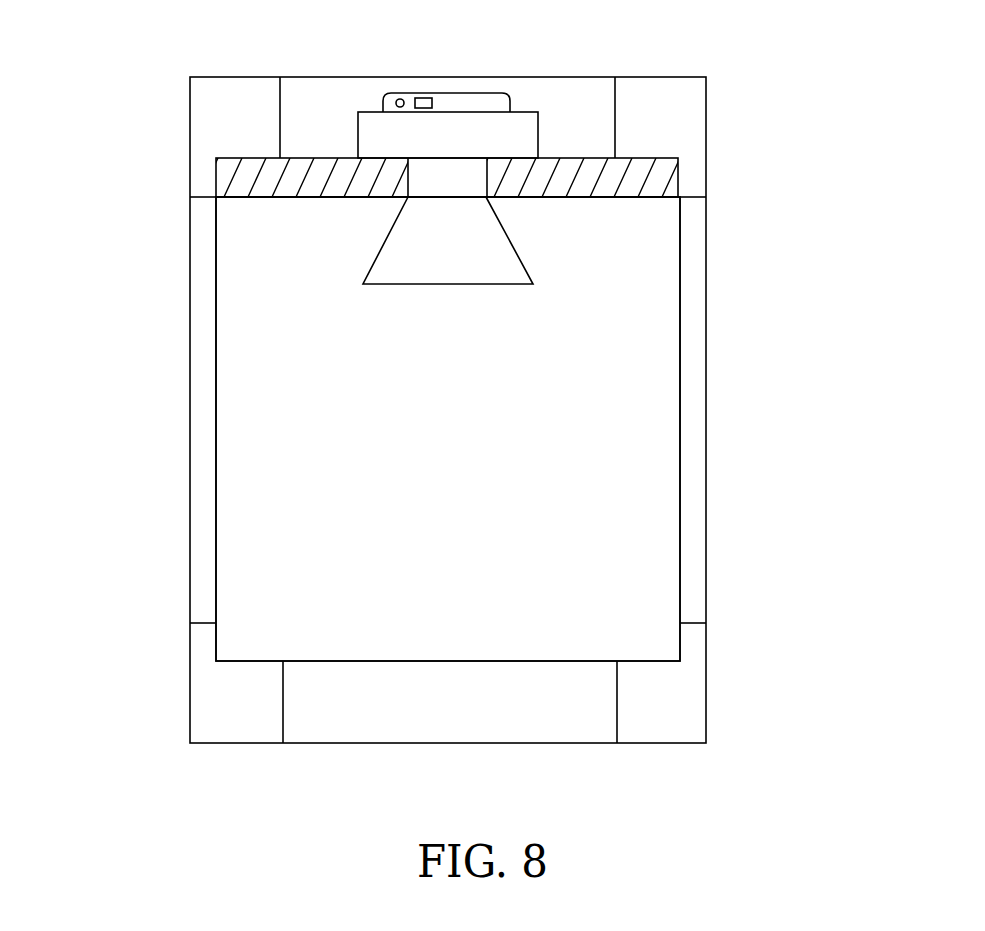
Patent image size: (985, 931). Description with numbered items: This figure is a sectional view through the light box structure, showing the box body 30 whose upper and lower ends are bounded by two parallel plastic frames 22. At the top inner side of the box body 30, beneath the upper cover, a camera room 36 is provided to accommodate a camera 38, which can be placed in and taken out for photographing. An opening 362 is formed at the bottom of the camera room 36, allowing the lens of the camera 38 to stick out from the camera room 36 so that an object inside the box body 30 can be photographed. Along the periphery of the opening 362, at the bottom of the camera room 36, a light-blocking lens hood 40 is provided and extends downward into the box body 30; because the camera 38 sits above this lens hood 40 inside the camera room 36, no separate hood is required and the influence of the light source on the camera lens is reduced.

The plastic frame 22 is at (192, 708).
The box body 30 is at (706, 402).
The camera room 36 is at (578, 110).
The opening 362 is at (425, 178).
The camera 38 is at (470, 102).
The light-blocking lens hood 40 is at (522, 258).